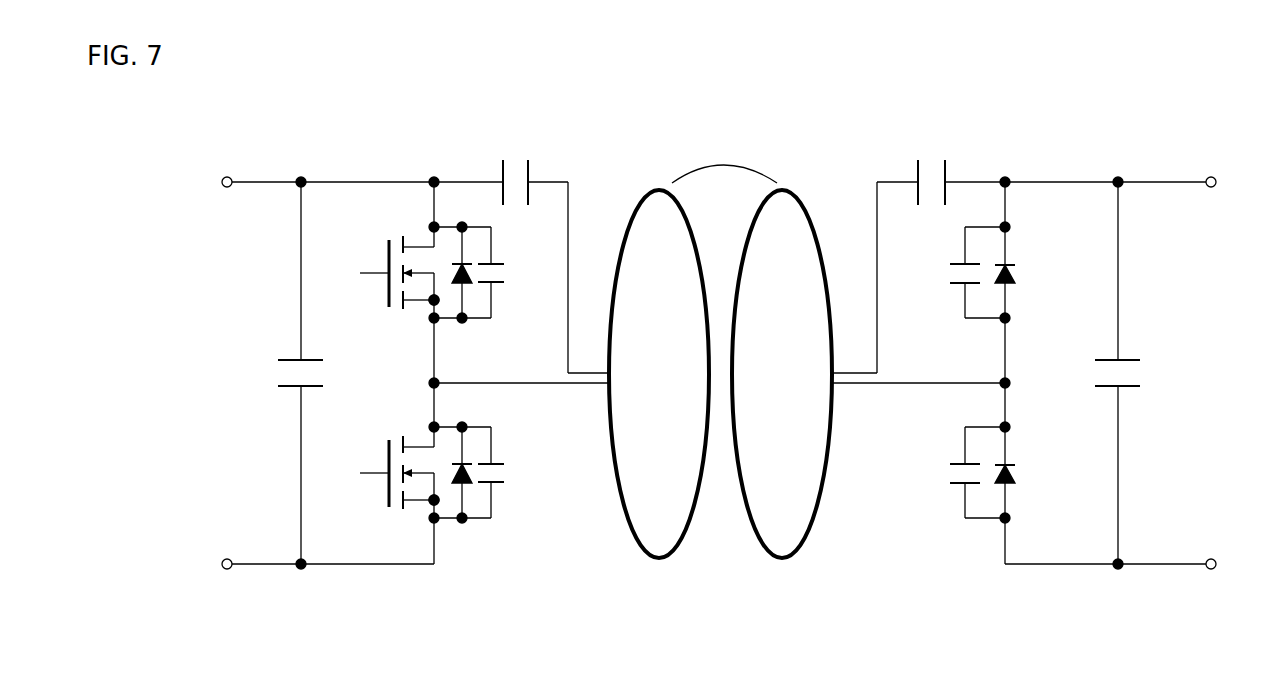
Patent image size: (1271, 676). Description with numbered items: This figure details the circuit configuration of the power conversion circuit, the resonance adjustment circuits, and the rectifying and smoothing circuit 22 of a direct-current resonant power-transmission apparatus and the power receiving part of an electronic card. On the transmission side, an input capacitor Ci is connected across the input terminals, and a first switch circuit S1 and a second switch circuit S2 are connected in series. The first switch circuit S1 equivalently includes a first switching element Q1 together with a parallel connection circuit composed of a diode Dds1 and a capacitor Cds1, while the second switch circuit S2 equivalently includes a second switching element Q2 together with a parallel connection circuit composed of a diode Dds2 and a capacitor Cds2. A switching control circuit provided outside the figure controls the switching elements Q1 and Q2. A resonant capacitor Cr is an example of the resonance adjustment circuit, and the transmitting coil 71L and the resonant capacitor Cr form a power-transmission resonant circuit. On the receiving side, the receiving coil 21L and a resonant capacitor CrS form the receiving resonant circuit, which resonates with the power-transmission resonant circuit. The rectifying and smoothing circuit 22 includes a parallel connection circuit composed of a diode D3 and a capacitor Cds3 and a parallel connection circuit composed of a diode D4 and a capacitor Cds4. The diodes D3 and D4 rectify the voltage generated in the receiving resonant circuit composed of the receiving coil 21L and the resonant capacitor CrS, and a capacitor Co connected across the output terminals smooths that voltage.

The transmitting coil 71L is at (645, 192).
The receiving coil 21L is at (800, 197).
The rectifying and smoothing circuit 22 is at (1021, 313).
The first switch circuit S1 is at (418, 513).
The second switch circuit S2 is at (418, 316).
The first switching element Q1 is at (390, 470).
The second switching element Q2 is at (390, 270).
The input capacitor Ci is at (284, 373).
The capacitor Co is at (1136, 373).
The resonant capacitor Cr is at (515, 164).
The resonant capacitor CrS is at (930, 164).
The capacitor Cds1 is at (497, 472).
The capacitor Cds2 is at (497, 272).
The capacitor Cds3 is at (948, 472).
The capacitor Cds4 is at (948, 272).
The diode Dds1 is at (477, 493).
The diode Dds2 is at (477, 293).
The diode D3 is at (1025, 476).
The diode D4 is at (1025, 276).